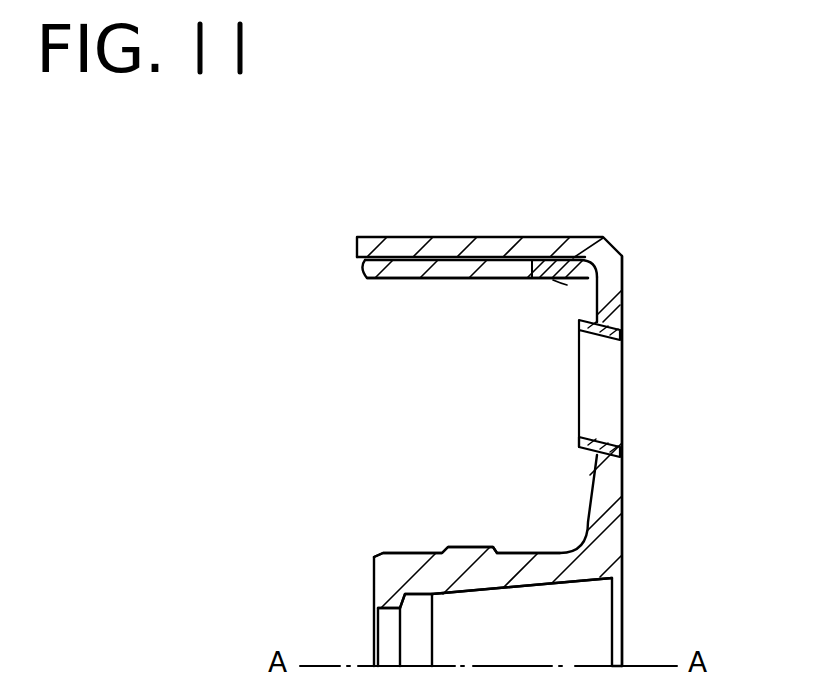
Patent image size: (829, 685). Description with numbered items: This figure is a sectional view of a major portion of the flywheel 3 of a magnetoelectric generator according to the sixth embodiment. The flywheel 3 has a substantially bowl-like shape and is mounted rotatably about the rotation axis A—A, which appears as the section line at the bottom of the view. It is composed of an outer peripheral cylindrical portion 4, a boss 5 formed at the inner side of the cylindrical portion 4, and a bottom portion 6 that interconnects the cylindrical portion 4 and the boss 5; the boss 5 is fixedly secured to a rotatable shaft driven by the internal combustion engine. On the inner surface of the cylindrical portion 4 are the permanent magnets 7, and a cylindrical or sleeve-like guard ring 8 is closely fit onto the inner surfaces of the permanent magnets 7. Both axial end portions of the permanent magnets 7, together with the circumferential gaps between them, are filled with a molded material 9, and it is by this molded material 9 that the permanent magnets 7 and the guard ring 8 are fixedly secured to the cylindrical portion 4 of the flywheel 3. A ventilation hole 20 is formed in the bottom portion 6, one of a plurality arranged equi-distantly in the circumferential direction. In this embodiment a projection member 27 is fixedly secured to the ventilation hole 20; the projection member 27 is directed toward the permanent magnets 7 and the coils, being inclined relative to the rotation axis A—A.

The flywheel 3 is at (650, 268).
The outer peripheral cylindrical portion 4 is at (505, 237).
The boss 5 is at (517, 556).
The bottom portion 6 is at (622, 495).
The permanent magnets 7 is at (465, 267).
The guard ring 8 is at (437, 280).
The molded material 9 is at (547, 267).
The ventilation hole 20 is at (612, 446).
The projection member 27 is at (612, 345).